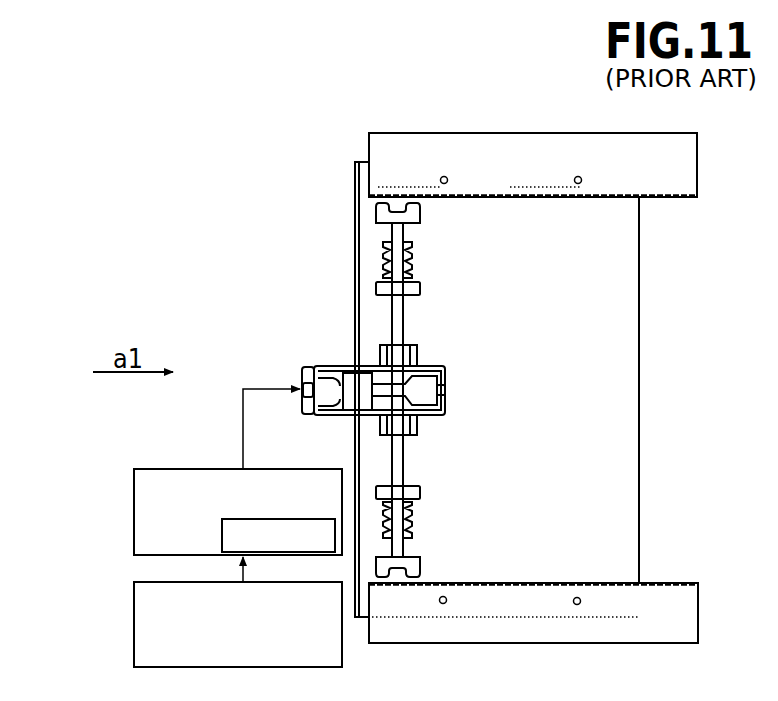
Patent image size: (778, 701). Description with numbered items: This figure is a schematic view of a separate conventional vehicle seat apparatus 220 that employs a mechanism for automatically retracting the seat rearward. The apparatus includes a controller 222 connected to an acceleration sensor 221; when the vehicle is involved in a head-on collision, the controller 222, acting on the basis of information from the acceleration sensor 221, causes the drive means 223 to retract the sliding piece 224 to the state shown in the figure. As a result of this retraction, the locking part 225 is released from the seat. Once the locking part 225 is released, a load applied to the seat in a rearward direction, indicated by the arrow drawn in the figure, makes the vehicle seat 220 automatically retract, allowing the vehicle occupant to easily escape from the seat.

The vehicle seat apparatus 220 is at (268, 201).
The acceleration sensor 221 is at (134, 623).
The controller 222 is at (134, 509).
The drive means 223 is at (303, 367).
The sliding piece 224 is at (425, 372).
The locking part 225 is at (420, 217).